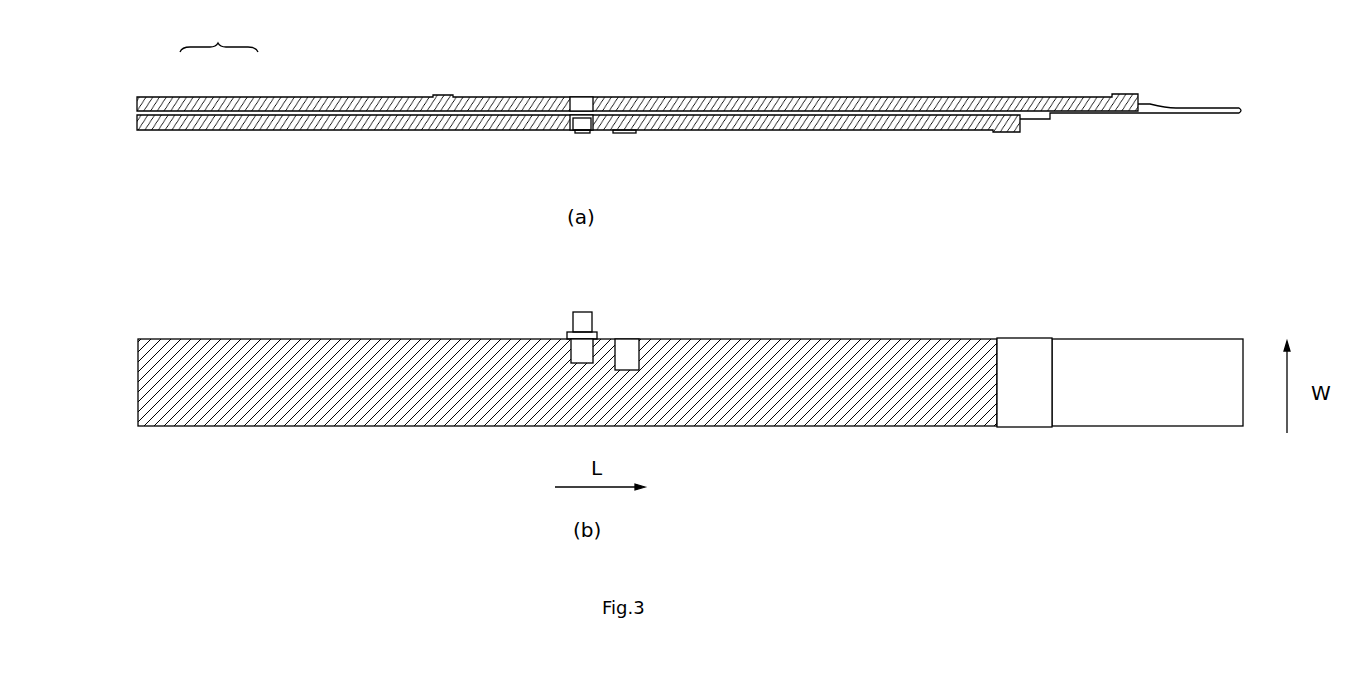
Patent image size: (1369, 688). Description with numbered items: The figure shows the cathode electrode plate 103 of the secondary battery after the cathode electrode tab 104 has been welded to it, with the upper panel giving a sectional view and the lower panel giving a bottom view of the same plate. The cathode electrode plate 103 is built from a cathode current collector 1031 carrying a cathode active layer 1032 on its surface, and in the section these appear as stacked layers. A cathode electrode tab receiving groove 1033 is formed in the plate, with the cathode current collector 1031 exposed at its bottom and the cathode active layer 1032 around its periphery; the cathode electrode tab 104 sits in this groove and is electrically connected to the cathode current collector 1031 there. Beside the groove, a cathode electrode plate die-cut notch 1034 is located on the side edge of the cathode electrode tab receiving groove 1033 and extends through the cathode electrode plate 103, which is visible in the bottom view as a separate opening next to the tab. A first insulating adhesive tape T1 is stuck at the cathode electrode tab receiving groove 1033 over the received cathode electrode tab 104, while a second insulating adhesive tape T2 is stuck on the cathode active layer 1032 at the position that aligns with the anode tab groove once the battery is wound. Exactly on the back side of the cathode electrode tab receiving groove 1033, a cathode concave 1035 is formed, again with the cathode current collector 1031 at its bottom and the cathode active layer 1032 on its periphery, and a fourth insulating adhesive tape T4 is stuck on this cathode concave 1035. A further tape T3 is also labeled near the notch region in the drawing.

The cathode electrode plate 103 is at (219, 37).
The cathode current collector 1031 is at (207, 112).
The cathode active layer 1032 is at (155, 97).
The cathode electrode tab receiving groove 1033 is at (595, 130).
The cathode electrode plate die-cut notch 1034 is at (598, 339).
The cathode concave 1035 is at (578, 97).
The cathode electrode tab 104 is at (581, 133).
The first insulating adhesive tape T1 is at (572, 132).
The second insulating adhesive tape T2 is at (443, 95).
The third end T3 is at (632, 130).
The fourth insulating adhesive tape T4 is at (580, 97).